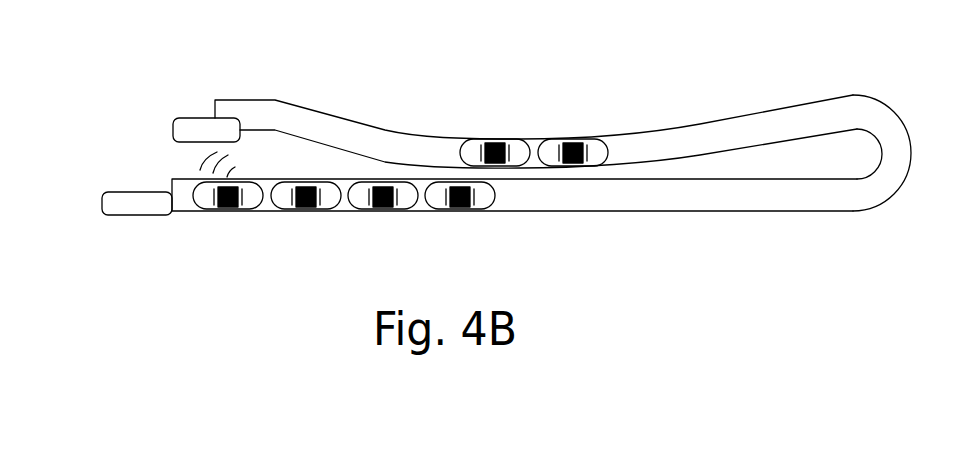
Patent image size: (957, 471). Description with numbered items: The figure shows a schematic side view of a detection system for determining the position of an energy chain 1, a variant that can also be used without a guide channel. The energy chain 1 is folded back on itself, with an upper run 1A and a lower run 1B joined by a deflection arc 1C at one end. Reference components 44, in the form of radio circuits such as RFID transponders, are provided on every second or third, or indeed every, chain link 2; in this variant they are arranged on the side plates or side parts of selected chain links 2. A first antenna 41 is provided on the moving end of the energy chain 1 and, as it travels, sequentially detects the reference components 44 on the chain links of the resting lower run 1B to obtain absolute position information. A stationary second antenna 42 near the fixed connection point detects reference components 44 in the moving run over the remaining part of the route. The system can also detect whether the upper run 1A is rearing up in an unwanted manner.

The energy chain 1 is at (561, 163).
The upper run 1A is at (710, 130).
The lower run 1B is at (707, 200).
The deflection arc 1C is at (890, 128).
The chain link 2 is at (470, 150).
The first antenna 41 is at (195, 128).
The second antenna 42 is at (143, 203).
The reference component 44 is at (493, 142).